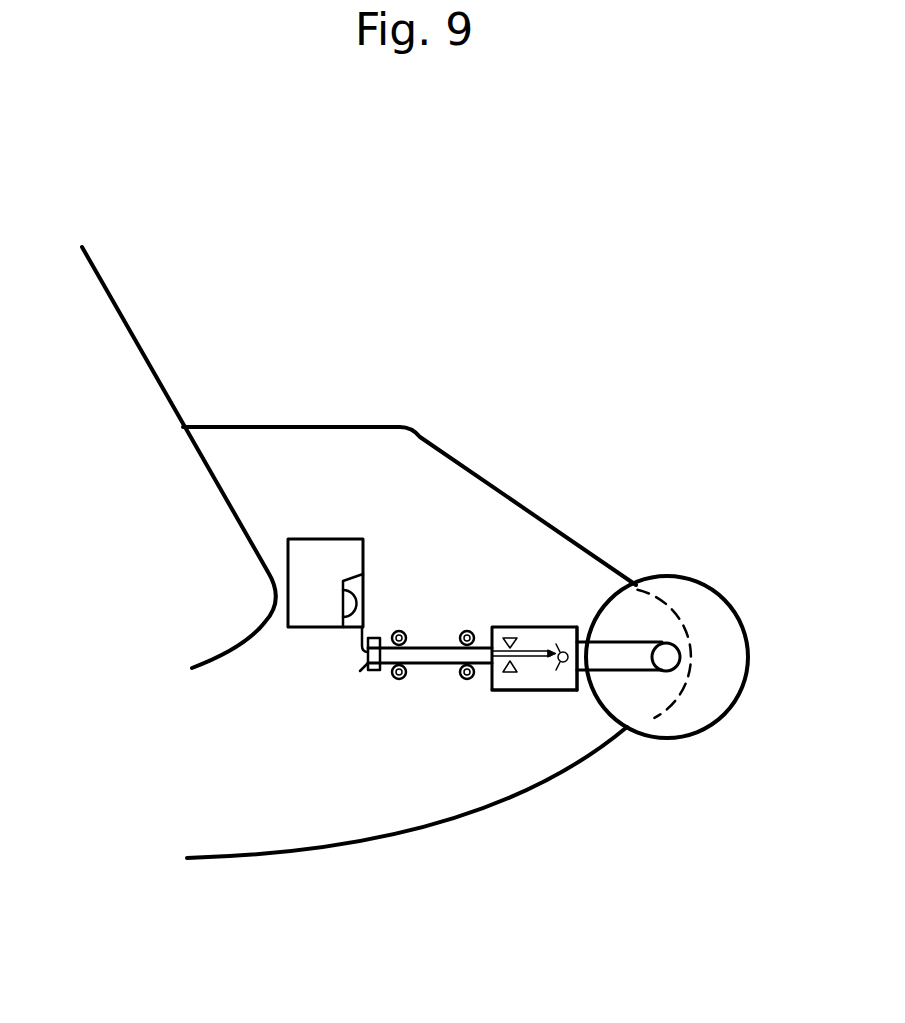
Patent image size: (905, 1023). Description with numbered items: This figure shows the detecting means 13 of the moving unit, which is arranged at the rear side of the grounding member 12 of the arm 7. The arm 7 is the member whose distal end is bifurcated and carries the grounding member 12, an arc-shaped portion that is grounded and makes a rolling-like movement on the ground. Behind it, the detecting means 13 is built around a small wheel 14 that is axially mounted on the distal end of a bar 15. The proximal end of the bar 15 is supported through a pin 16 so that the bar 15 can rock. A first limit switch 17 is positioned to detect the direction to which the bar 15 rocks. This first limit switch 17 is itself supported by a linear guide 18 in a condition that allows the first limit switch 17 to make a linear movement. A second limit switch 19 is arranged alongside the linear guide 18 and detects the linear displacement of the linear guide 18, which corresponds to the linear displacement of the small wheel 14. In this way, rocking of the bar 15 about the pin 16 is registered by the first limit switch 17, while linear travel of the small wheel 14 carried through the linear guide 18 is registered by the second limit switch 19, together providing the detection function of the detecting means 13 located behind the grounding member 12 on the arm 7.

The arm 7 is at (134, 338).
The grounding member 12 is at (475, 465).
The detecting means 13 is at (525, 622).
The small wheel 14 is at (698, 582).
The bar 15 is at (627, 673).
The pin 16 is at (578, 692).
The first limit switch 17 is at (514, 692).
The linear guide 18 is at (420, 690).
The second limit switch 19 is at (333, 539).